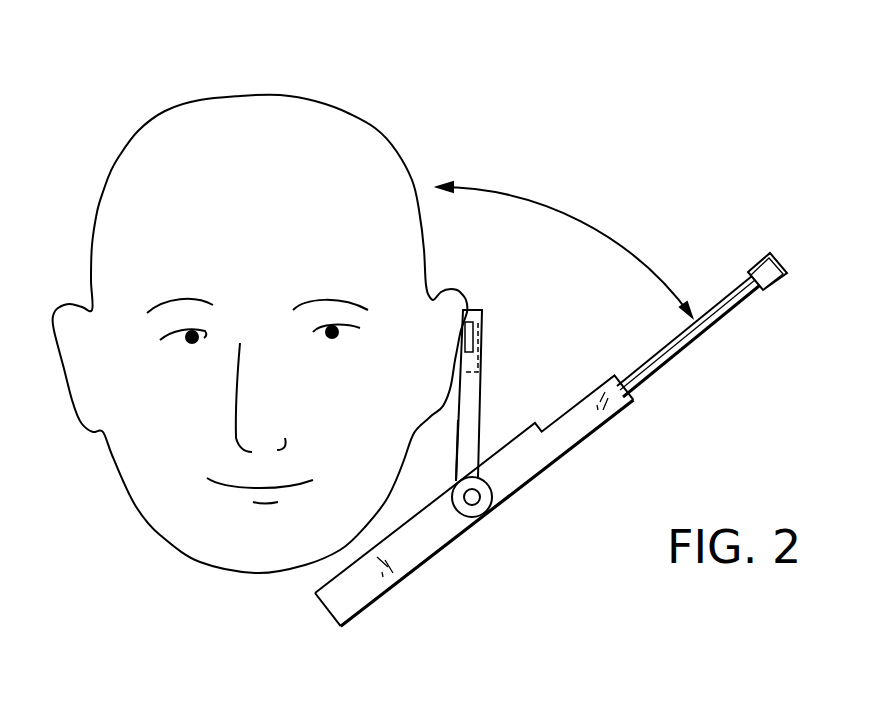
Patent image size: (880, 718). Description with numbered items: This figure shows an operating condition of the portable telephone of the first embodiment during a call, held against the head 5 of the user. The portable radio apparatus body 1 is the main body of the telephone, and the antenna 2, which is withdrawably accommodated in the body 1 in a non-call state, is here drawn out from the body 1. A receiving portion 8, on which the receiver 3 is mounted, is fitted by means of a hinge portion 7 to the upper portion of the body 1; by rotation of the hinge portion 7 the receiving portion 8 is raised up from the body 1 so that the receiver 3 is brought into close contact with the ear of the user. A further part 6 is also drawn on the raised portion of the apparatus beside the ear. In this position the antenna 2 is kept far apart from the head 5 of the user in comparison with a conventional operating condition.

The base member 1 is at (558, 447).
The telescoping extension rod 2 is at (728, 283).
The slide clip 3 is at (482, 328).
The head of user 5 is at (338, 122).
The pivotable arm 6 is at (450, 290).
The pivot 7 is at (468, 517).
The arm lower portion 8 is at (470, 407).